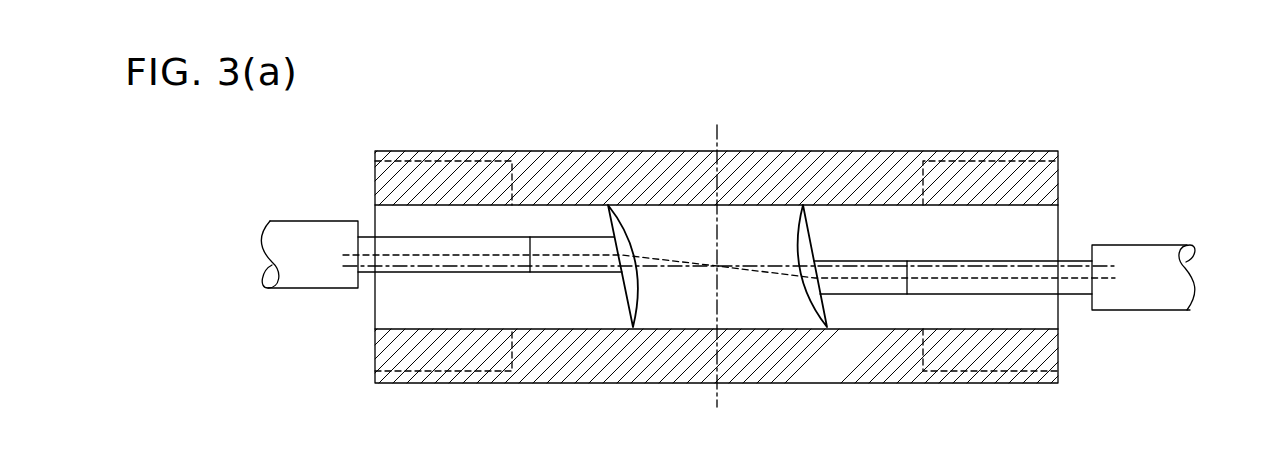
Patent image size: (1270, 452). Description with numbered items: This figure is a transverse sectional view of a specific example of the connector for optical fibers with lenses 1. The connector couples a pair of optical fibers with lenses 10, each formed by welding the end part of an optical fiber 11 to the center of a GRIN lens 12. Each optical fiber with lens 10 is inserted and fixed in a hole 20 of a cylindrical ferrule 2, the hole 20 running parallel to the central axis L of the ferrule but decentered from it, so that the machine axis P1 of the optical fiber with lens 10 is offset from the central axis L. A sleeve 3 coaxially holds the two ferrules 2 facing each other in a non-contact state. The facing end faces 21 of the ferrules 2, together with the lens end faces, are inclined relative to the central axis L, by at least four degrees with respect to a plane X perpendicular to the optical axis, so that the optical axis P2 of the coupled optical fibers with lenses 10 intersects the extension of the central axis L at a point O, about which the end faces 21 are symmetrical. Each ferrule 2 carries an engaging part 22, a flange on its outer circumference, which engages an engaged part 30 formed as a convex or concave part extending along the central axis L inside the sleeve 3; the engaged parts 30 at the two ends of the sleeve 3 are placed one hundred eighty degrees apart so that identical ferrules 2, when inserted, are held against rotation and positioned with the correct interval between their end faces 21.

The connector for optical fibers with lenses 1 is at (1025, 103).
The ferrule 2 is at (907, 261).
The sleeve 3 is at (803, 205).
The optical fiber with lens 10 is at (575, 114).
The optical fiber 11 is at (441, 237).
The lens 12 is at (549, 237).
The hole 20 is at (603, 240).
The end face 21 is at (800, 222).
The engaging part 22 is at (394, 164).
The engaged part 30 is at (375, 176).
The plane perpendicular to the optical axis X is at (716, 252).
The point O is at (716, 267).
The machine axis P1 is at (880, 277).
The optical axis P2 is at (668, 259).
The central axis L is at (983, 262).